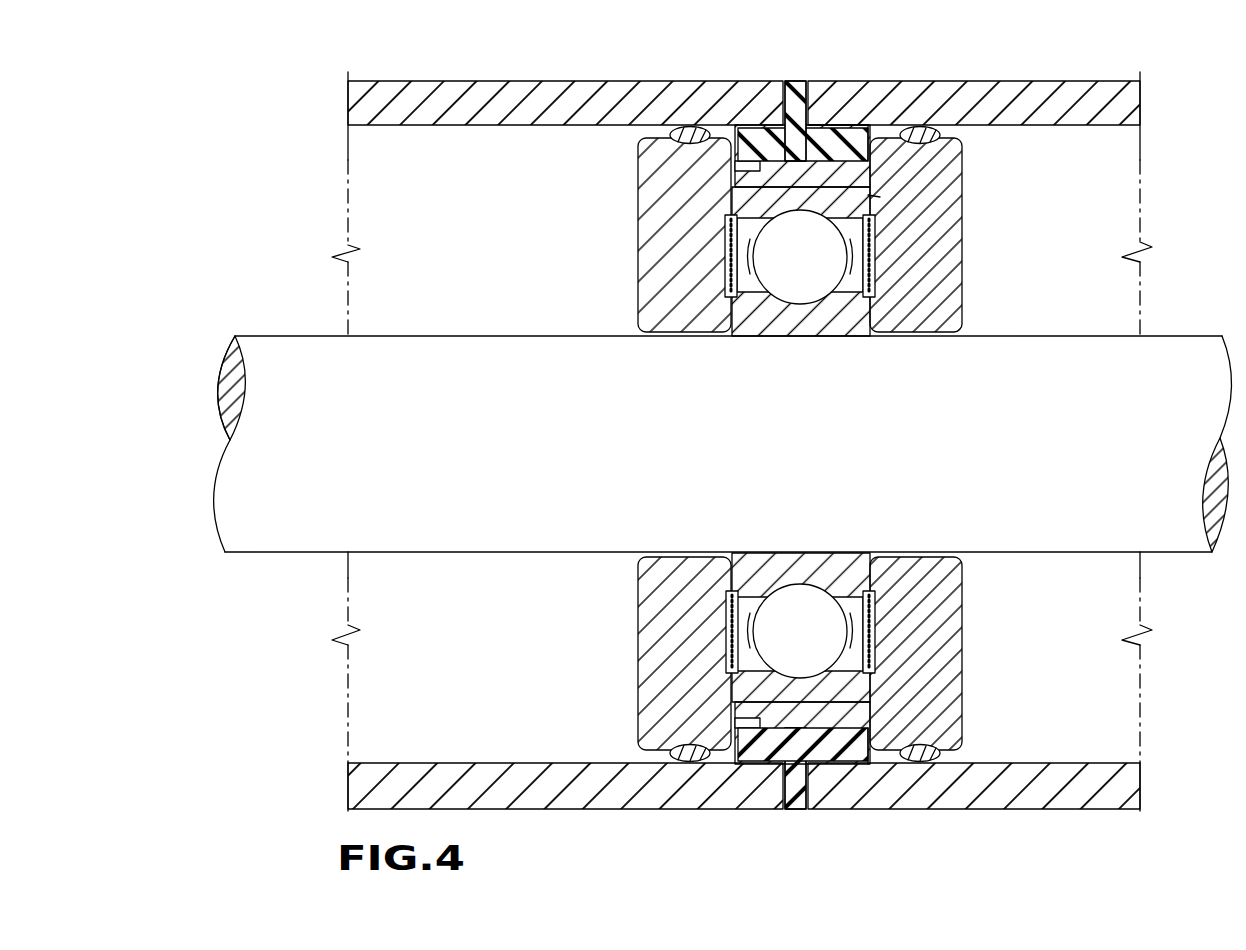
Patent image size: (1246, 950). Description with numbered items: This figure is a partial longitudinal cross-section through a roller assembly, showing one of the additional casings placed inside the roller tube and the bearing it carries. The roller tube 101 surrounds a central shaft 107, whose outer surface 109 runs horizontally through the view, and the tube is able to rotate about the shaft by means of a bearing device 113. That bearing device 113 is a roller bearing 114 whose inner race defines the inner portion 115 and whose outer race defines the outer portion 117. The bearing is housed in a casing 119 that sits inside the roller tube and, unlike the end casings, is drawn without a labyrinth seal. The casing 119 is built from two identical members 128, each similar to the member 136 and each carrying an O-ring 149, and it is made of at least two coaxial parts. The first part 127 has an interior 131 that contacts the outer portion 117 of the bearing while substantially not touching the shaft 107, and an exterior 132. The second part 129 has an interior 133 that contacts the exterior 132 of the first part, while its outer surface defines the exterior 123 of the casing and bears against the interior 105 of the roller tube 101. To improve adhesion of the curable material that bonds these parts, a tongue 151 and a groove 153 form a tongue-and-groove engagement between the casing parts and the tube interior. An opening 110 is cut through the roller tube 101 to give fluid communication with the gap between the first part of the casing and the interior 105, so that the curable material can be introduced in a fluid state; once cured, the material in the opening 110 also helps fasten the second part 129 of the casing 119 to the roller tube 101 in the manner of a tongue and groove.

The roller tube 101 is at (1108, 99).
The interior of the roller tube 105 is at (1095, 125).
The shaft 107 is at (268, 401).
The outer surface of the shaft 109 is at (408, 337).
The opening 110 is at (828, 58).
The bearing device 113 is at (857, 228).
The roller bearing 114 is at (803, 275).
The inner portion of the bearing device 115 is at (858, 312).
The outer portion of the bearing device 117 is at (870, 212).
The casing 119 is at (935, 266).
The exterior of the casing 123 is at (835, 128).
The first part of the casing 127 is at (714, 172).
The member of the casing 128 is at (667, 180).
The second part of the casing 129 is at (776, 130).
The interior of the first part 131 is at (673, 337).
The exterior of the first part 132 is at (772, 752).
The interior of the second part 133 is at (745, 750).
The member 136 is at (880, 197).
The O-ring 149 is at (688, 128).
The tongue 151 is at (885, 125).
The groove 153 is at (900, 765).